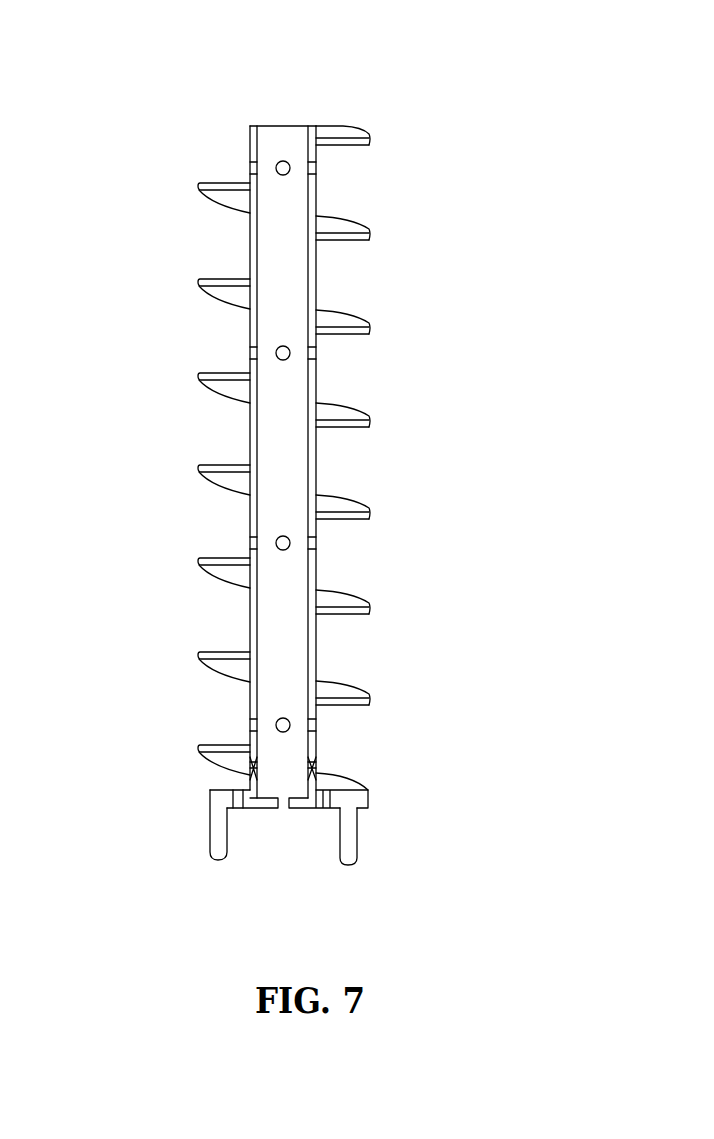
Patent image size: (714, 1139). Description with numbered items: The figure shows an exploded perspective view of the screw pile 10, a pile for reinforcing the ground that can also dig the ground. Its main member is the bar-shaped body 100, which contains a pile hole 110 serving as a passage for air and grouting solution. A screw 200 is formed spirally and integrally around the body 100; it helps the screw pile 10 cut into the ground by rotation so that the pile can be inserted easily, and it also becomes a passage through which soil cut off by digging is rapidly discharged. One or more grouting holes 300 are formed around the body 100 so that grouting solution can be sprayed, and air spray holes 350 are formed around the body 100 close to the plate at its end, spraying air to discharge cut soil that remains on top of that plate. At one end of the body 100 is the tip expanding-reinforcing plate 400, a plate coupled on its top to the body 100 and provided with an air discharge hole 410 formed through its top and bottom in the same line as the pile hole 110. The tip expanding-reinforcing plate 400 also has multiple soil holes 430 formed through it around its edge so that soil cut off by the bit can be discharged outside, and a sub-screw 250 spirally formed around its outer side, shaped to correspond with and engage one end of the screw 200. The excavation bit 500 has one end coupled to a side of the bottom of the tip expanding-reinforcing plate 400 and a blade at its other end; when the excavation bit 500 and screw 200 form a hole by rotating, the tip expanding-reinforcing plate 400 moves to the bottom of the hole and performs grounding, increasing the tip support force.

The screw pile 10 is at (440, 117).
The body 100 is at (316, 273).
The pile hole 110 is at (281, 138).
The screw 200 is at (342, 410).
The sub-screw 250 is at (368, 791).
The grouting holes 300 is at (282, 352).
The air spray holes 350 is at (316, 769).
The tip expanding-reinforcing plate 400 is at (210, 795).
The air discharge hole 410 is at (282, 803).
The soil holes 430 is at (237, 810).
The excavation bit 500 is at (353, 842).